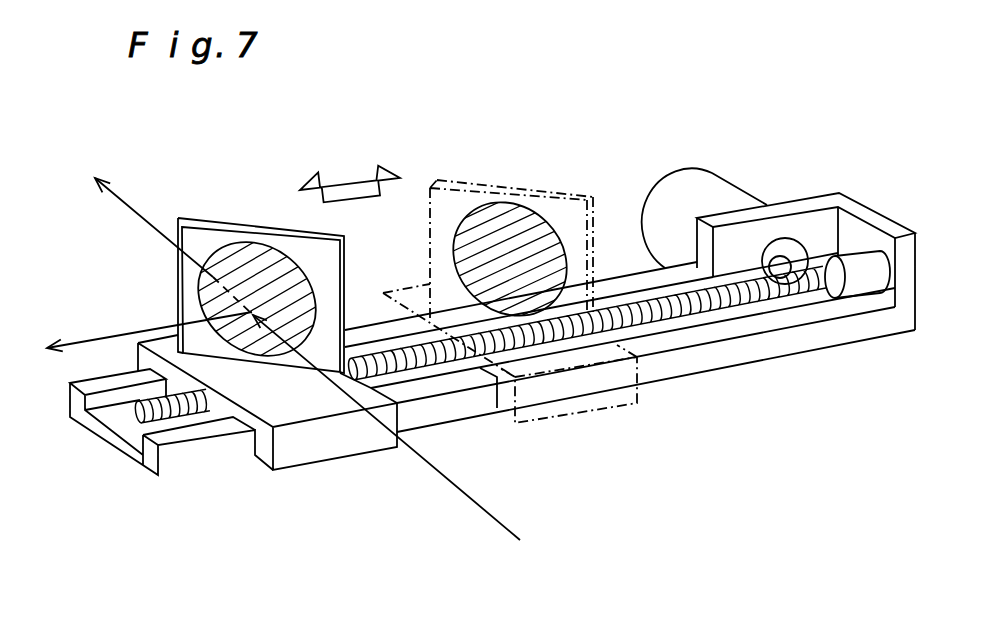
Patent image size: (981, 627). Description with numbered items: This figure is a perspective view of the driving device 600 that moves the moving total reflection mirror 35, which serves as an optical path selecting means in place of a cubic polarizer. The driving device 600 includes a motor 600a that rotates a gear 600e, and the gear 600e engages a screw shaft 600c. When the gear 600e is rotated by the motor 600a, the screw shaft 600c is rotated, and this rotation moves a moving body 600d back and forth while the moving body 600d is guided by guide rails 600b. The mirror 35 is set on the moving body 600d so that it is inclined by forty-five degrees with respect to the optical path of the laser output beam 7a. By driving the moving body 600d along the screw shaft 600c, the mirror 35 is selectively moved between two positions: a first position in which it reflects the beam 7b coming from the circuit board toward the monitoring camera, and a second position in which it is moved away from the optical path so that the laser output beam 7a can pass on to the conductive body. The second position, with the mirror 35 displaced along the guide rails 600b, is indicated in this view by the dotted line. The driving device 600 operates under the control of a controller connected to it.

The laser output beam 7a is at (113, 194).
The beam from the circuit board 7b is at (92, 340).
The moving total reflection mirror 35 is at (253, 258).
The driving device 600 is at (627, 161).
The motor 600a is at (718, 188).
The guide rails 600b is at (150, 453).
The screw shaft 600c is at (190, 410).
The moving body 600d is at (330, 440).
The gear 600e is at (783, 288).